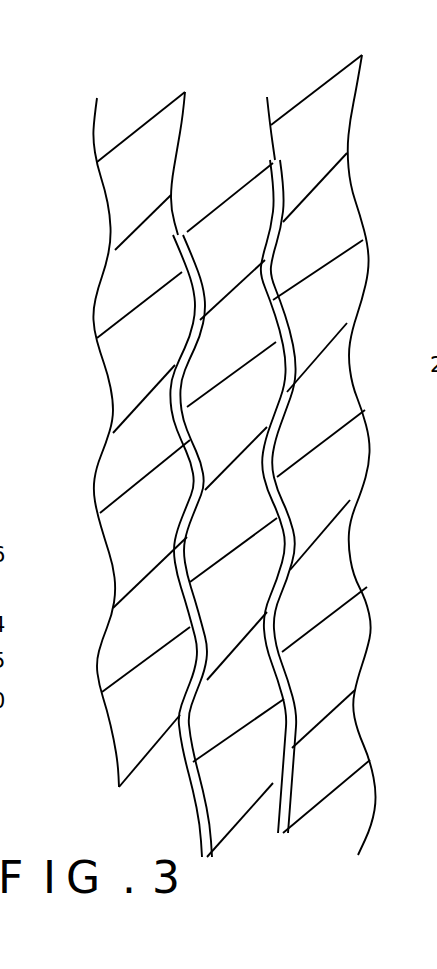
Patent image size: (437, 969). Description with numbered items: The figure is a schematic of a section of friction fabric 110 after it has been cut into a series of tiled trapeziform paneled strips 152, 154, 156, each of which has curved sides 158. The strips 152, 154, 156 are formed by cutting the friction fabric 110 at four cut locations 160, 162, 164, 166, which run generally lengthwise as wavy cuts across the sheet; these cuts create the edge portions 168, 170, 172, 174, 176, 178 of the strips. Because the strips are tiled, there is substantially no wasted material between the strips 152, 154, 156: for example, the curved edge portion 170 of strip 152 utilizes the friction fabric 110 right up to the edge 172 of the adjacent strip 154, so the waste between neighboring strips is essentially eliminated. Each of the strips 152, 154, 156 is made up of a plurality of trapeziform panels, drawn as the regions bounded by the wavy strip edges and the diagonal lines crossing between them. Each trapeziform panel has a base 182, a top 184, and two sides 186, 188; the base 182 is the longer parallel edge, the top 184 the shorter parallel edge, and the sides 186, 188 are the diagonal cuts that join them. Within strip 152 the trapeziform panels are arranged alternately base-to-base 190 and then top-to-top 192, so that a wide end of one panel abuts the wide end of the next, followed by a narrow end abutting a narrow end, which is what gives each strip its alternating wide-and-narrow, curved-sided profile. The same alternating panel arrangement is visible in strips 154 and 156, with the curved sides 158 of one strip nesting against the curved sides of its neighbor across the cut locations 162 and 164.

The friction fabric 110 is at (110, 790).
The paneled strip 152 is at (161, 777).
The paneled strip 154 is at (244, 848).
The paneled strip 156 is at (336, 845).
The curved sides 158 is at (97, 670).
The cut location 160 is at (103, 86).
The cut location 162 is at (191, 83).
The cut location 164 is at (270, 78).
The cut location 166 is at (353, 50).
The edge portion 168 is at (107, 212).
The curved edge portion 170 is at (173, 240).
The edge portion 172 is at (188, 255).
The edge portion 174 is at (277, 202).
The edge portion 176 is at (285, 245).
The edge portion 178 is at (123, 370).
The base 182 is at (123, 413).
The top 184 is at (133, 577).
The side 186 is at (107, 543).
The side 188 is at (140, 452).
The base-to-base arrangement 190 is at (348, 598).
The top-to-top arrangement 192 is at (348, 680).